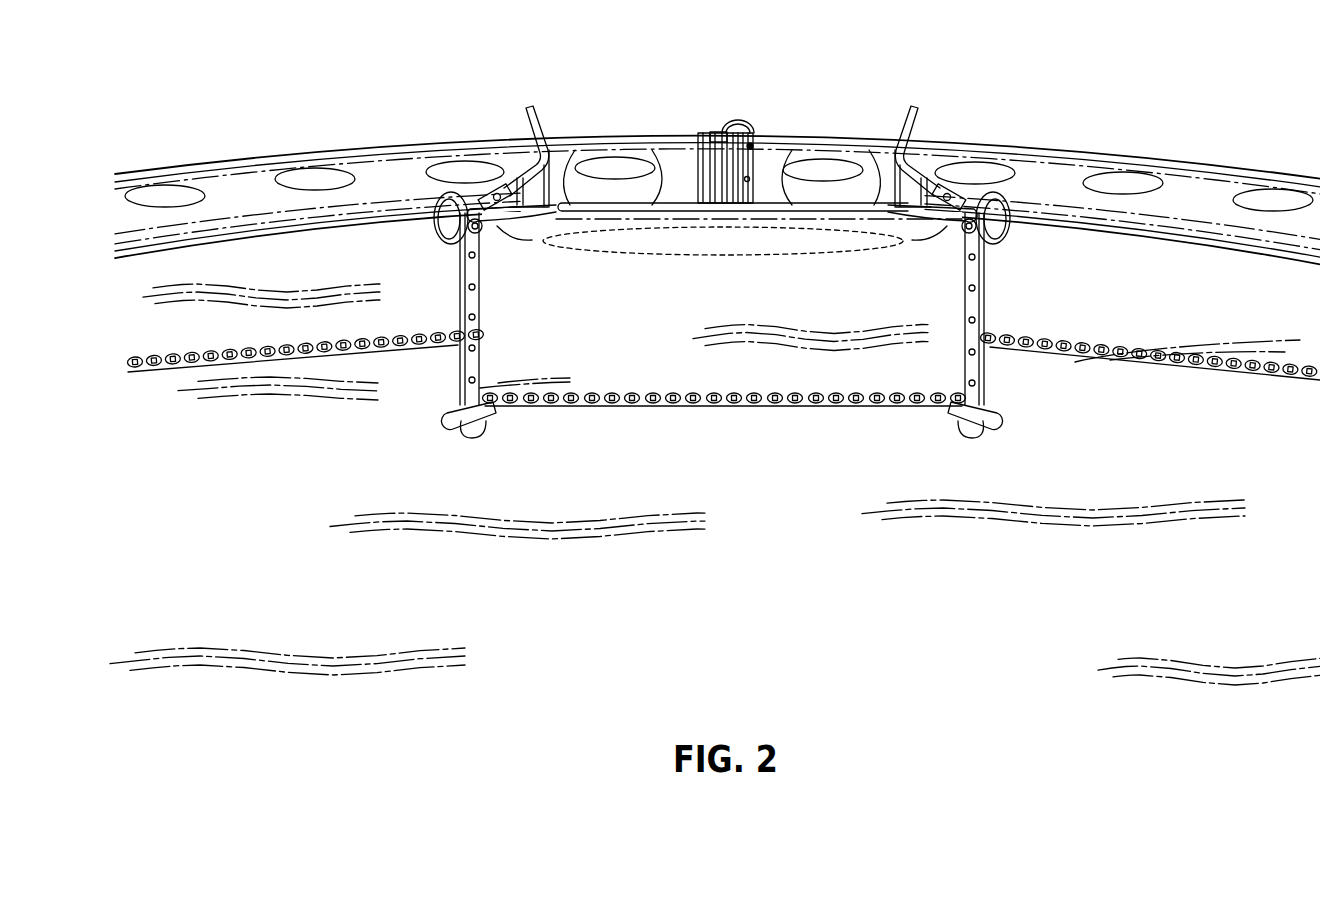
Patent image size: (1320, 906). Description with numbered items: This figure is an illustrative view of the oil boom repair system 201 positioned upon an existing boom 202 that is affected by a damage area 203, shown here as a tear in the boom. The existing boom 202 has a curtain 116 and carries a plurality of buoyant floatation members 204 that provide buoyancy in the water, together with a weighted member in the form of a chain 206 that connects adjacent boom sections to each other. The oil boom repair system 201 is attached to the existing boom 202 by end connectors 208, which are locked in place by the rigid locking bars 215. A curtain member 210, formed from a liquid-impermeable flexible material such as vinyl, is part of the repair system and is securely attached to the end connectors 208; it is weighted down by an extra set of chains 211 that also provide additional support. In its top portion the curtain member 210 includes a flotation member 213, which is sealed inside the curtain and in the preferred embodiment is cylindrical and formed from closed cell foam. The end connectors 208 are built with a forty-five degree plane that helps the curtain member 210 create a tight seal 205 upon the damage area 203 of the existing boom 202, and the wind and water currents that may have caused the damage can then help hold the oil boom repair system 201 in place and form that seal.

The oil boom repair system 201 is at (917, 70).
The existing boom 202 is at (1075, 165).
The damage area 203 is at (752, 146).
The buoyant floatation members 204 is at (1192, 183).
The tight seal 205 is at (838, 165).
The chain 206 is at (337, 345).
The curtain 116 is at (1160, 360).
The end connectors 208 is at (473, 361).
The curtain member 210 is at (813, 380).
The chains 211 is at (670, 407).
The flotation member 213 is at (667, 247).
The rigid locking bars 215 is at (446, 438).